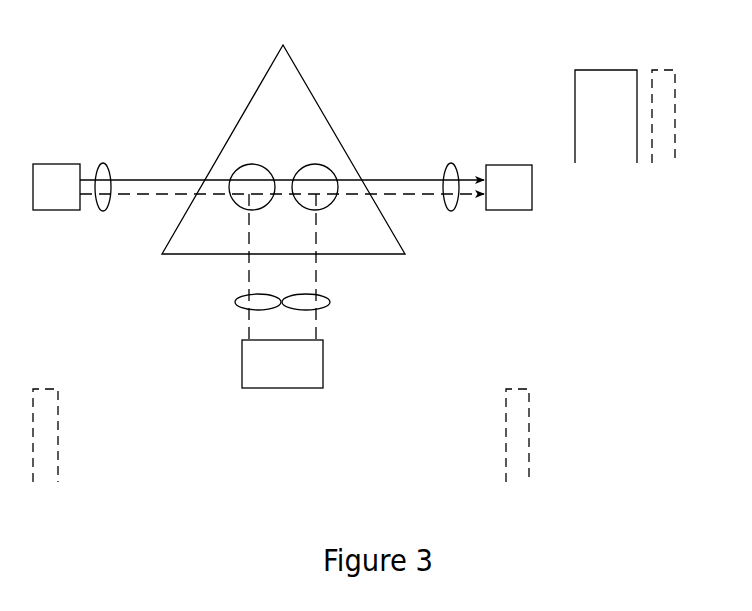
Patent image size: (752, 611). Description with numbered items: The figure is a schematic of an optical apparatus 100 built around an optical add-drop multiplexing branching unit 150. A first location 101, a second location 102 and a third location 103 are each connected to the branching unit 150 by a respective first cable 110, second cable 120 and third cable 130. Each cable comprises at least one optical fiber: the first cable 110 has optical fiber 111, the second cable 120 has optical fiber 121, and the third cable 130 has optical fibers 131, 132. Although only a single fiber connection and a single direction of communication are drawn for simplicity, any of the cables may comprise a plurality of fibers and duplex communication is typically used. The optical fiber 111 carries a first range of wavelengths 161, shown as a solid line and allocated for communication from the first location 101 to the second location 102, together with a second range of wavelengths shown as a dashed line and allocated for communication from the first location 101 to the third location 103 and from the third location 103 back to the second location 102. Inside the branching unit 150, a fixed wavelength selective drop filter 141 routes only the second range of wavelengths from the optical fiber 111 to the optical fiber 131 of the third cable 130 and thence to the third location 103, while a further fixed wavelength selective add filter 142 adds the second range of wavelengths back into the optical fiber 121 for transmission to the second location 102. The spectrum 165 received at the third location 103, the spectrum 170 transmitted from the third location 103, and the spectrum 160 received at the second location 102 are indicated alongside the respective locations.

The optical apparatus 100 is at (418, 110).
The first location 101 is at (58, 210).
The second location 102 is at (532, 187).
The third location 103 is at (297, 388).
The first cable 110 is at (154, 168).
The optical fiber 111 is at (103, 163).
The second cable 120 is at (370, 145).
The optical fiber 121 is at (451, 211).
The third cable 130 is at (252, 338).
The optical fiber 131 is at (235, 302).
The optical fiber 132 is at (330, 303).
The drop filter 141 is at (247, 210).
The add filter 142 is at (331, 203).
The branching unit 150 is at (244, 113).
The spectrum 160 is at (642, 129).
The first range of wavelengths 161 is at (607, 70).
The spectrum 165 is at (82, 430).
The spectrum 170 is at (555, 430).